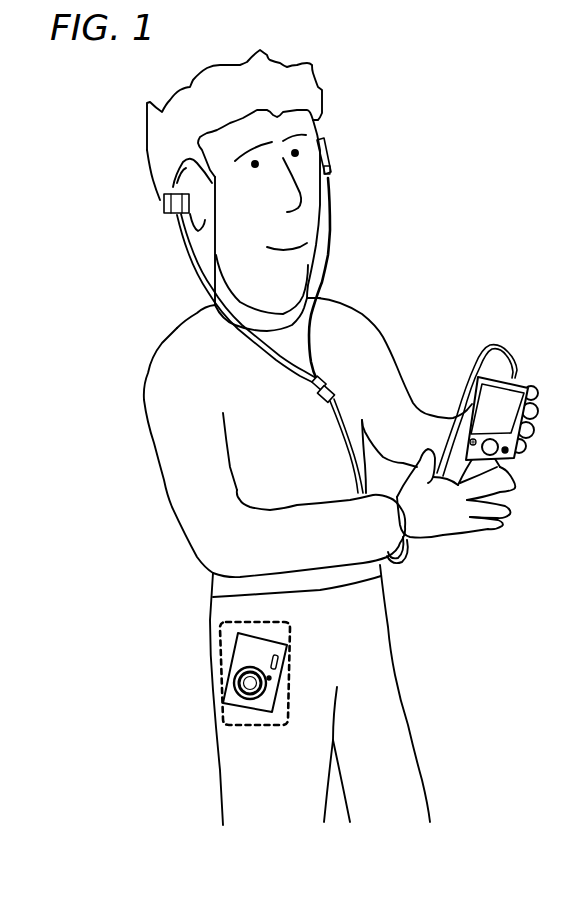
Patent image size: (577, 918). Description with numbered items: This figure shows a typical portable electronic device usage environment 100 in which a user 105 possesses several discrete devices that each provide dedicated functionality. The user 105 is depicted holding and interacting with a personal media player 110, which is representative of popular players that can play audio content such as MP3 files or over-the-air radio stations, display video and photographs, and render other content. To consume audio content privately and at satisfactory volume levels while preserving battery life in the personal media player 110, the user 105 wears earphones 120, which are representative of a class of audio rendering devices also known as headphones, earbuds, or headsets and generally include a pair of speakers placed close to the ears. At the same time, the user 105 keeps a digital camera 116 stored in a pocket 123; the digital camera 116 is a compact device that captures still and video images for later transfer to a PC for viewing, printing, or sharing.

The portable electronic device usage environment 100 is at (382, 27).
The user 105 is at (148, 382).
The personal media player 110 is at (527, 383).
The digital camera 116 is at (288, 642).
The earphones 120 is at (352, 451).
The pocket 123 is at (268, 727).